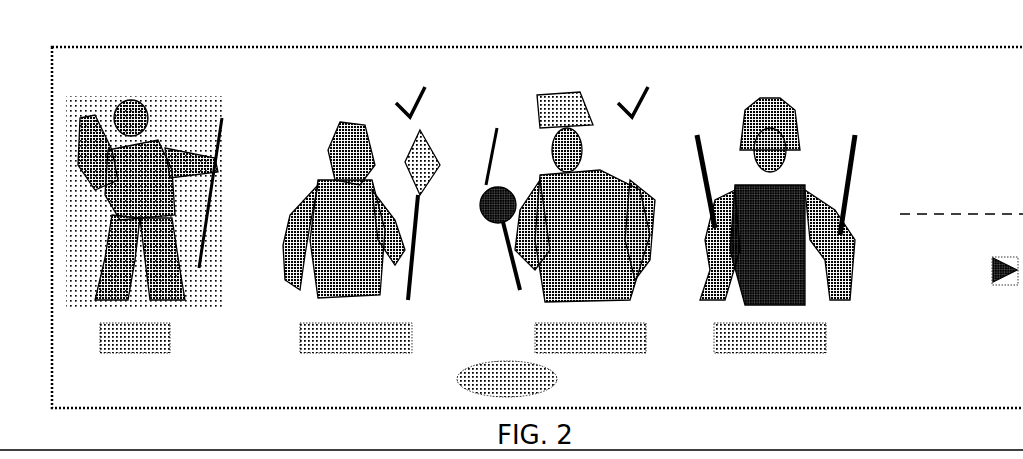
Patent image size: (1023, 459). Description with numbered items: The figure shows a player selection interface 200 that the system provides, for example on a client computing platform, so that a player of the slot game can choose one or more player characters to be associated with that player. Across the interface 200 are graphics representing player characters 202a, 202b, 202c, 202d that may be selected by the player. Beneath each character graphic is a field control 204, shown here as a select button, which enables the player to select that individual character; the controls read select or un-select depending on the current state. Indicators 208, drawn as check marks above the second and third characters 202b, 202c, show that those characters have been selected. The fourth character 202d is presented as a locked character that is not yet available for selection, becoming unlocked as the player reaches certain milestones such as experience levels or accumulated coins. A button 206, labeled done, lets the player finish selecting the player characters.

The player selection interface 200 is at (657, 415).
The player character graphic 202a is at (145, 208).
The player character graphic 202b is at (361, 221).
The player character graphic 202c is at (567, 206).
The player character graphic 202d is at (776, 209).
The field control 204 is at (170, 353).
The button 206 is at (557, 388).
The indicator 208 is at (426, 100).